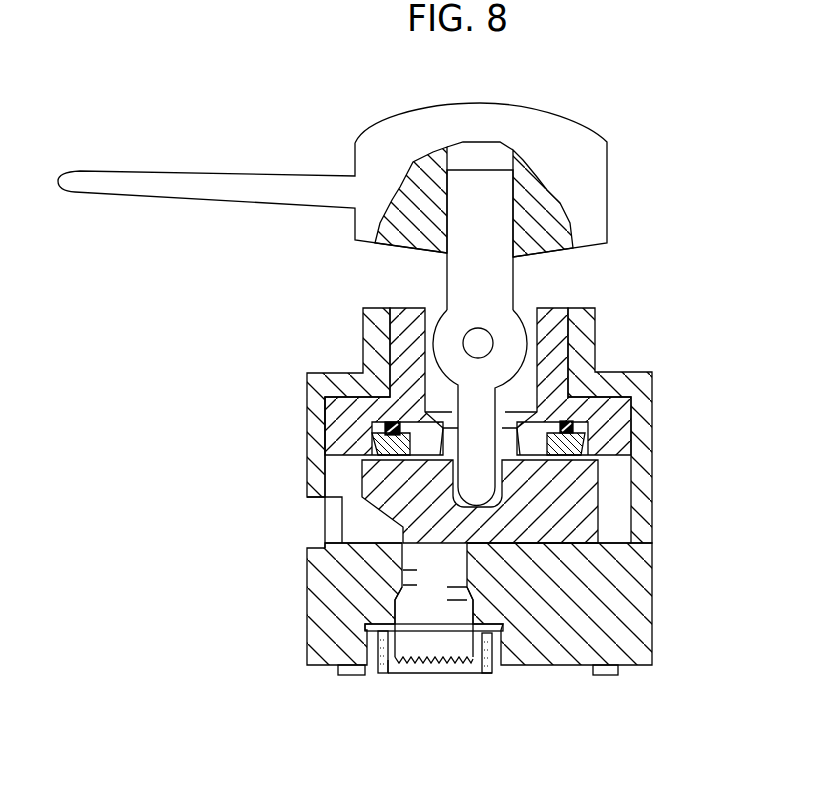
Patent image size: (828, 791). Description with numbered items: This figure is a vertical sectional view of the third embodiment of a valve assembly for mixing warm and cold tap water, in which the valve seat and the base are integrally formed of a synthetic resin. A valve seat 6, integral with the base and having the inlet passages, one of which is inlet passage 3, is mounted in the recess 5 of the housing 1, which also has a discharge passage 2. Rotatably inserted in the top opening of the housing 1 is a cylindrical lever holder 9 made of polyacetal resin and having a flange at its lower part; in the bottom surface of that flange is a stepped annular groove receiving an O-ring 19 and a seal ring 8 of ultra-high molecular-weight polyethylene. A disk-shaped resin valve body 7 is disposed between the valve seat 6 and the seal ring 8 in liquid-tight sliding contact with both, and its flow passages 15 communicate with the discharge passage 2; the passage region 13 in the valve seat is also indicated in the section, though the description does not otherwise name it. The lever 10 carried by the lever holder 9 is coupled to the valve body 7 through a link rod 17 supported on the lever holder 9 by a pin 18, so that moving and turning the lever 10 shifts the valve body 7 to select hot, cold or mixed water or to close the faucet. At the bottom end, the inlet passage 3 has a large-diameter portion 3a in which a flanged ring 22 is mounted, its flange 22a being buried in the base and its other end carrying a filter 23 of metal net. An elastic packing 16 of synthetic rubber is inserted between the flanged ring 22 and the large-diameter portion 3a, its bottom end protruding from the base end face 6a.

The valve housing 1 is at (613, 385).
The discharge passage 2 is at (317, 500).
The inlet passage 3 is at (433, 642).
The large-diameter portion 3a is at (355, 675).
The recess 5 is at (622, 491).
The valve seat 6 is at (603, 608).
The base end face 6a is at (583, 667).
The valve body 7 is at (360, 458).
The seal ring 8 is at (587, 442).
The lever holder 9 is at (553, 313).
The lever 10 is at (150, 178).
The valve bore 13 is at (418, 570).
The flow passages 15 is at (358, 510).
The elastic packing 16 is at (367, 670).
The link rod 17 is at (455, 265).
The pin 18 is at (472, 346).
The O-ring 19 is at (385, 425).
The flanged ring 22 is at (385, 633).
The flange 22a is at (497, 637).
The filter 23 is at (452, 673).